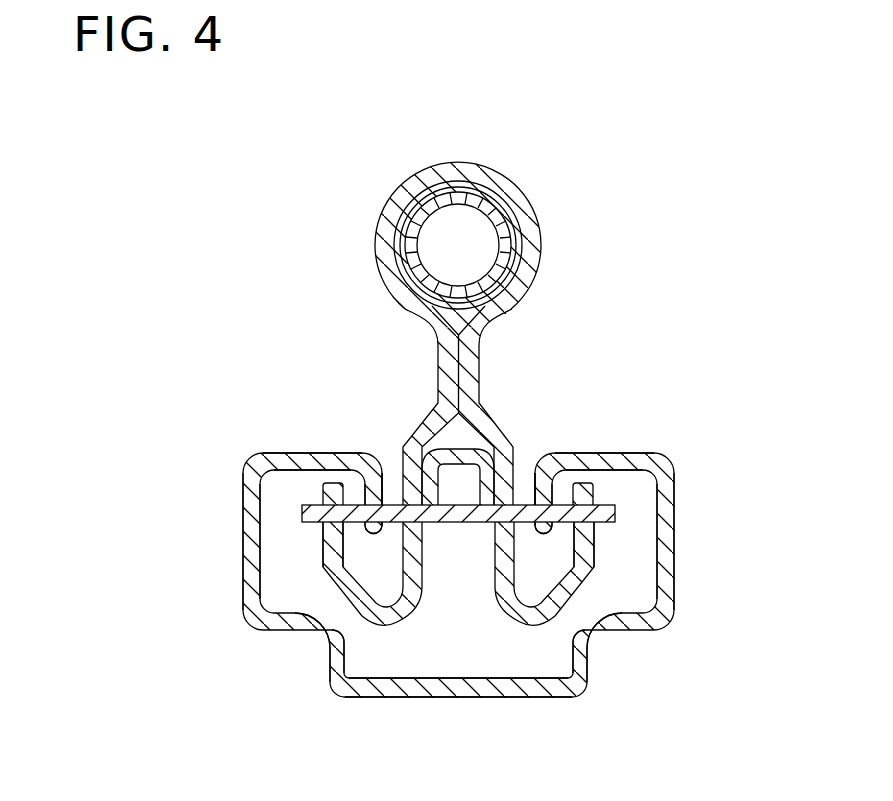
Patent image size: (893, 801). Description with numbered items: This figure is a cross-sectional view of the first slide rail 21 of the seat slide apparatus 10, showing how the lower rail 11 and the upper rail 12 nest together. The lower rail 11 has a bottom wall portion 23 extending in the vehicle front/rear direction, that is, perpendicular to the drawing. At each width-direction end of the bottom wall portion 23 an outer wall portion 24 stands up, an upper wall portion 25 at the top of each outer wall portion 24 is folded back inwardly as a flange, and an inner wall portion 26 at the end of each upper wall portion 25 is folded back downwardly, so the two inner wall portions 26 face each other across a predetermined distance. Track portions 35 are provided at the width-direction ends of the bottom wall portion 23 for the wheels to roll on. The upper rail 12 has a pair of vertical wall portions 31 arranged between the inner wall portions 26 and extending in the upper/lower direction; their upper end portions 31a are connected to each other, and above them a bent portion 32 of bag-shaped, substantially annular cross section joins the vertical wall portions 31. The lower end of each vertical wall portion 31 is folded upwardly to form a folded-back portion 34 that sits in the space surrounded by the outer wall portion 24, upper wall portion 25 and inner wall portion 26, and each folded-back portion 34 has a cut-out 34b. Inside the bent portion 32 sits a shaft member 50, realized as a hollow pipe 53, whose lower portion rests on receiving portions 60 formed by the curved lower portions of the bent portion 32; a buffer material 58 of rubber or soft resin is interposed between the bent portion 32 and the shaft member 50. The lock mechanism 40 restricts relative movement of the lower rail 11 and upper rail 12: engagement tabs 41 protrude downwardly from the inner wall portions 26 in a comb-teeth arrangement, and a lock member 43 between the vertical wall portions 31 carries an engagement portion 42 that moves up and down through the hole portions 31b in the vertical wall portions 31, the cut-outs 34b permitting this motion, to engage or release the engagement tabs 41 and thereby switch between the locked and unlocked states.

The seat slide apparatus 10 is at (222, 186).
The first slide rail 21 is at (458, 428).
The lower rail 11 is at (254, 466).
The upper rail 12 is at (405, 178).
The bottom wall portion 23 is at (476, 697).
The outer wall portion 24 is at (246, 556).
The upper wall portion 25 is at (292, 456).
The inner wall portion 26 is at (378, 477).
The vertical wall portion 31 is at (498, 360).
The upper end portion 31a is at (453, 405).
The hole portion 31b is at (428, 588).
The bent portion 32 is at (460, 162).
The folded-back portion 34 is at (352, 456).
The cut-out 34b is at (326, 584).
The track portion 35 is at (296, 631).
The lock mechanism 40 is at (632, 466).
The engagement tab 41 is at (373, 533).
The engagement portion 42 is at (620, 508).
The lock member 43 is at (457, 526).
The shaft member 50 is at (522, 226).
The pipe 53 is at (458, 245).
The buffer material 58 is at (504, 200).
The receiving portion 60 is at (410, 308).